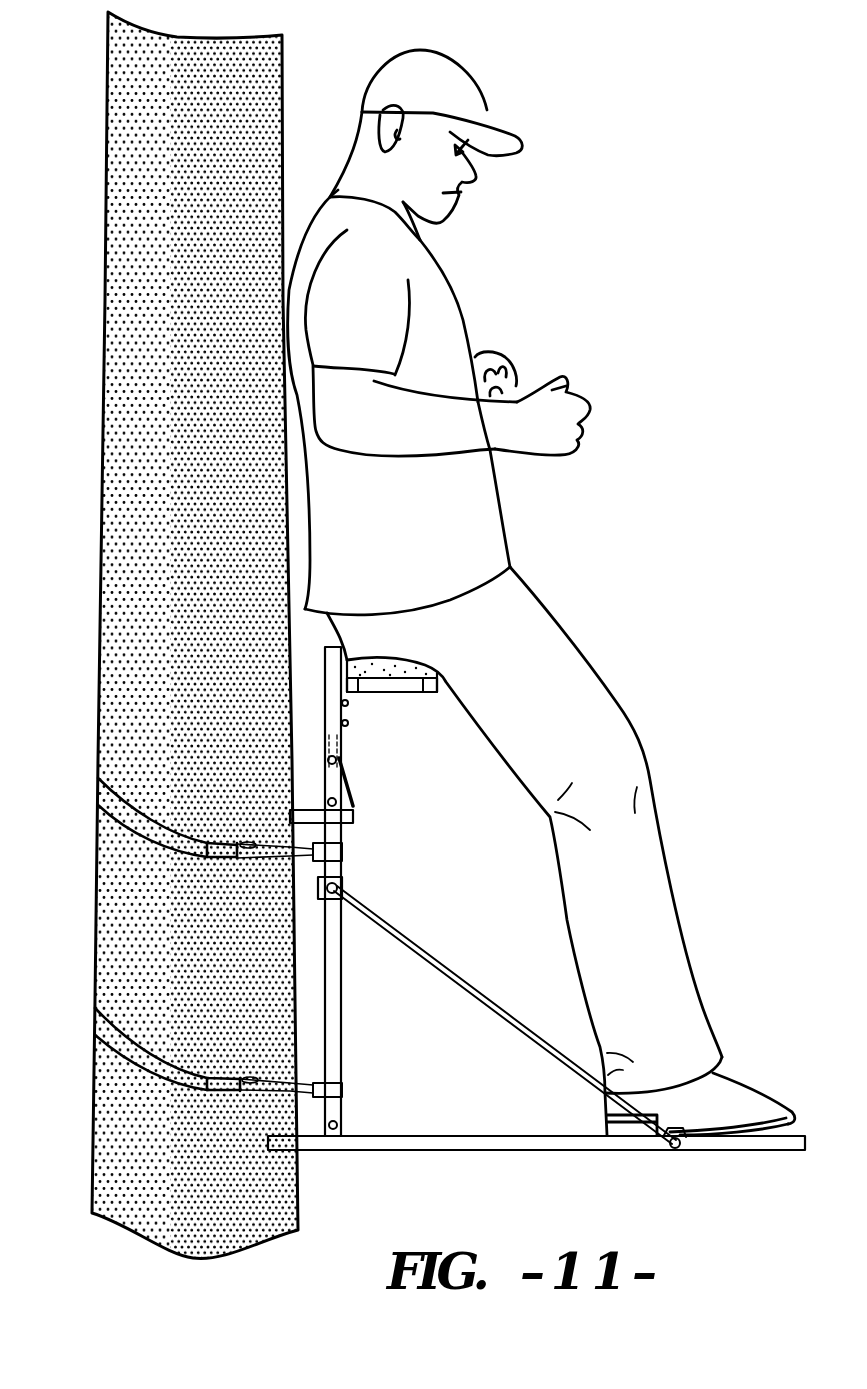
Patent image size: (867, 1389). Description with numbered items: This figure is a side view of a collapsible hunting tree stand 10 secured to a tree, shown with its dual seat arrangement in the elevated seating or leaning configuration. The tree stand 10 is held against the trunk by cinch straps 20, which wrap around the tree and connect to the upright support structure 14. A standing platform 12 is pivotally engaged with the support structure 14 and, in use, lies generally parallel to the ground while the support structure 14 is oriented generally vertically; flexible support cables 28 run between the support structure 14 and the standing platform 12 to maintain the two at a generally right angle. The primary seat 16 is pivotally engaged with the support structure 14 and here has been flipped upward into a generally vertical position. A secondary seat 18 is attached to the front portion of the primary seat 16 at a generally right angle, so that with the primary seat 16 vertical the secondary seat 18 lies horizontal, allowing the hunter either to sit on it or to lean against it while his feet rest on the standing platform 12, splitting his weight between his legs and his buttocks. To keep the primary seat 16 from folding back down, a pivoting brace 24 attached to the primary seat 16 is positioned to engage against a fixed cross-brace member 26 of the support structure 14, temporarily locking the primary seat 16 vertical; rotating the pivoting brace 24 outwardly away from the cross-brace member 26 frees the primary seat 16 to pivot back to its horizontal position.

The collapsible hunting tree stand 10 is at (414, 943).
The standing platform 12 is at (718, 1143).
The support structure 14 is at (342, 1040).
The primary seat 16 is at (335, 712).
The secondary seat 18 is at (392, 694).
The cinch straps 20 is at (120, 814).
The pivoting brace 24 is at (352, 784).
The fixed cross-brace member 26 is at (350, 825).
The flexible support cables 28 is at (445, 968).